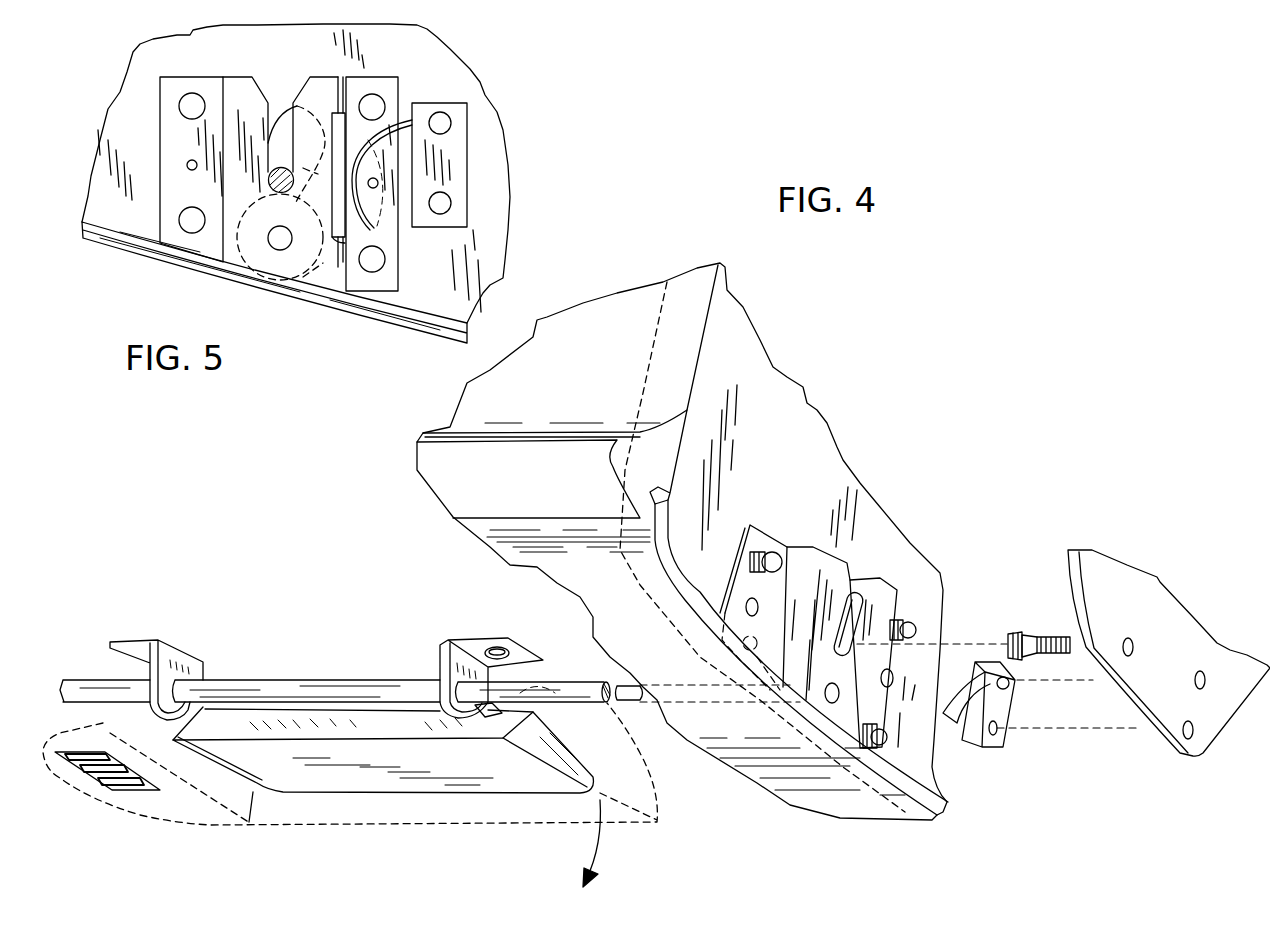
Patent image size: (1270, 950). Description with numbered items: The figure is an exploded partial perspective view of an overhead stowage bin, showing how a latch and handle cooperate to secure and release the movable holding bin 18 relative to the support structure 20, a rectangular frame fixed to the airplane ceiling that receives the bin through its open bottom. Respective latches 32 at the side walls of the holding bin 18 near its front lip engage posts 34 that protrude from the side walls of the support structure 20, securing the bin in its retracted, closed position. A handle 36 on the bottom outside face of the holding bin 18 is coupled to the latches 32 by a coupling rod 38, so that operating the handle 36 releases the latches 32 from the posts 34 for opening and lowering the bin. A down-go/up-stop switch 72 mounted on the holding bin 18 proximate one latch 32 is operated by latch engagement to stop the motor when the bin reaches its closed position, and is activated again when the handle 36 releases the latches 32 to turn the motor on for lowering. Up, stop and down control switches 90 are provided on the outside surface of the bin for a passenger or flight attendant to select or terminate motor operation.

In FIG. 4, the holding bin 18 is at (789, 469).
In FIG. 4, the support structure 20 is at (1113, 583).
In FIG. 5, the latch 32 is at (283, 98).
In FIG. 4, the latch 32 is at (866, 560).
In FIG. 4, the post 34 is at (1018, 632).
In FIG. 4, the handle 36 is at (430, 777).
In FIG. 4, the coupling rod 38 is at (88, 680).
In FIG. 5, the down-go/up-stop switch 72 is at (460, 157).
In FIG. 4, the down-go/up-stop switch 72 is at (993, 747).
In FIG. 4, the up, stop and down control switches 90 is at (100, 777).